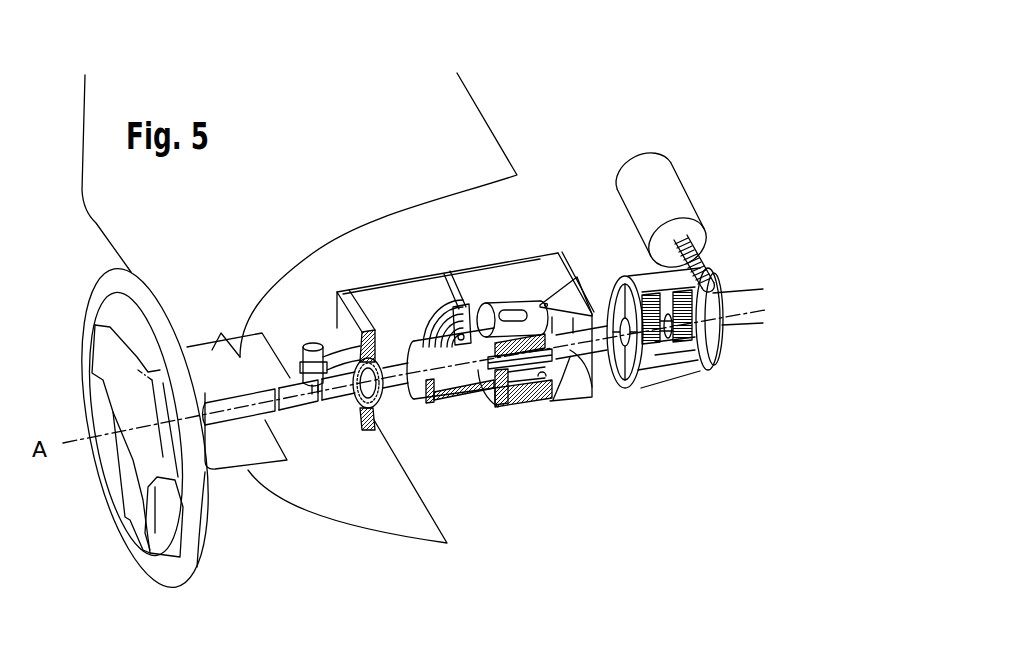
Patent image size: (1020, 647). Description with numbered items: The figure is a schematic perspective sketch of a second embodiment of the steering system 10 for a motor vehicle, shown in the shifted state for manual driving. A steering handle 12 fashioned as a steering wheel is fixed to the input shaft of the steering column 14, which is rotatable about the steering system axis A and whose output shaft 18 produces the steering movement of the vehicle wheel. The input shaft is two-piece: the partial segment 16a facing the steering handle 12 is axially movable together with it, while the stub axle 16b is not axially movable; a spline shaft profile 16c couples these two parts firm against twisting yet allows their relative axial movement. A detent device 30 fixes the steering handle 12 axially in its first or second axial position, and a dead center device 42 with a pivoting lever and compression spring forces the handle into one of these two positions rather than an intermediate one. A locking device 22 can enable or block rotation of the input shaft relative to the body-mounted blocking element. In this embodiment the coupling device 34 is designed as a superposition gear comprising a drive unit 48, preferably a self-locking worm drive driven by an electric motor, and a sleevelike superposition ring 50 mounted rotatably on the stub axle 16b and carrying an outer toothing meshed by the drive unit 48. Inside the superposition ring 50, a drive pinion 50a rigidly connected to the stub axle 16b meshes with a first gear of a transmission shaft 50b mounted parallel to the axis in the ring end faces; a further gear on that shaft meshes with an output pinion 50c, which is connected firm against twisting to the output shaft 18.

The steering system 10 is at (568, 98).
The steering handle 12 is at (152, 312).
The steering column 14 is at (508, 424).
The partial segment of the input shaft 16a is at (405, 388).
The stub axle 16b is at (562, 343).
The spline shaft profile 16c is at (510, 363).
The output shaft 18 is at (738, 300).
The locking device 22 is at (537, 281).
The detent device 30 is at (307, 425).
The coupling device 34 is at (657, 408).
The dead center device 42 is at (474, 292).
The drive unit 48 is at (664, 189).
The superposition ring 50 is at (703, 336).
The drive pinion 50a is at (657, 347).
The transmission shaft 50b is at (662, 303).
The output pinion 50c is at (693, 322).